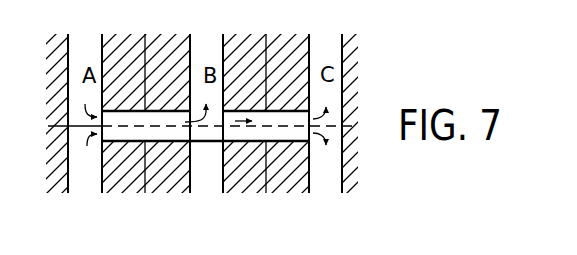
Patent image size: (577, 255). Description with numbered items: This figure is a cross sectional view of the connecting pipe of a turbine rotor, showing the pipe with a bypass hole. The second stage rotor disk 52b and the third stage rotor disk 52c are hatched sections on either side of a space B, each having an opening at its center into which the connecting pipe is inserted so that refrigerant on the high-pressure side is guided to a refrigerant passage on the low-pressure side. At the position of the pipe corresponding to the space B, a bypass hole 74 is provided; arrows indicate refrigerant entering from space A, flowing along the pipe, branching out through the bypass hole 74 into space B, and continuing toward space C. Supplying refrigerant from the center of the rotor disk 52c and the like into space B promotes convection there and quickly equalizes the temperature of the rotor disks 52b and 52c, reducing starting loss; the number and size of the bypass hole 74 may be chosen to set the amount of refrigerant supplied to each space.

The second stage rotor disk 52b is at (123, 177).
The third stage rotor disk 52c is at (283, 178).
The bypass hole 74 is at (208, 112).